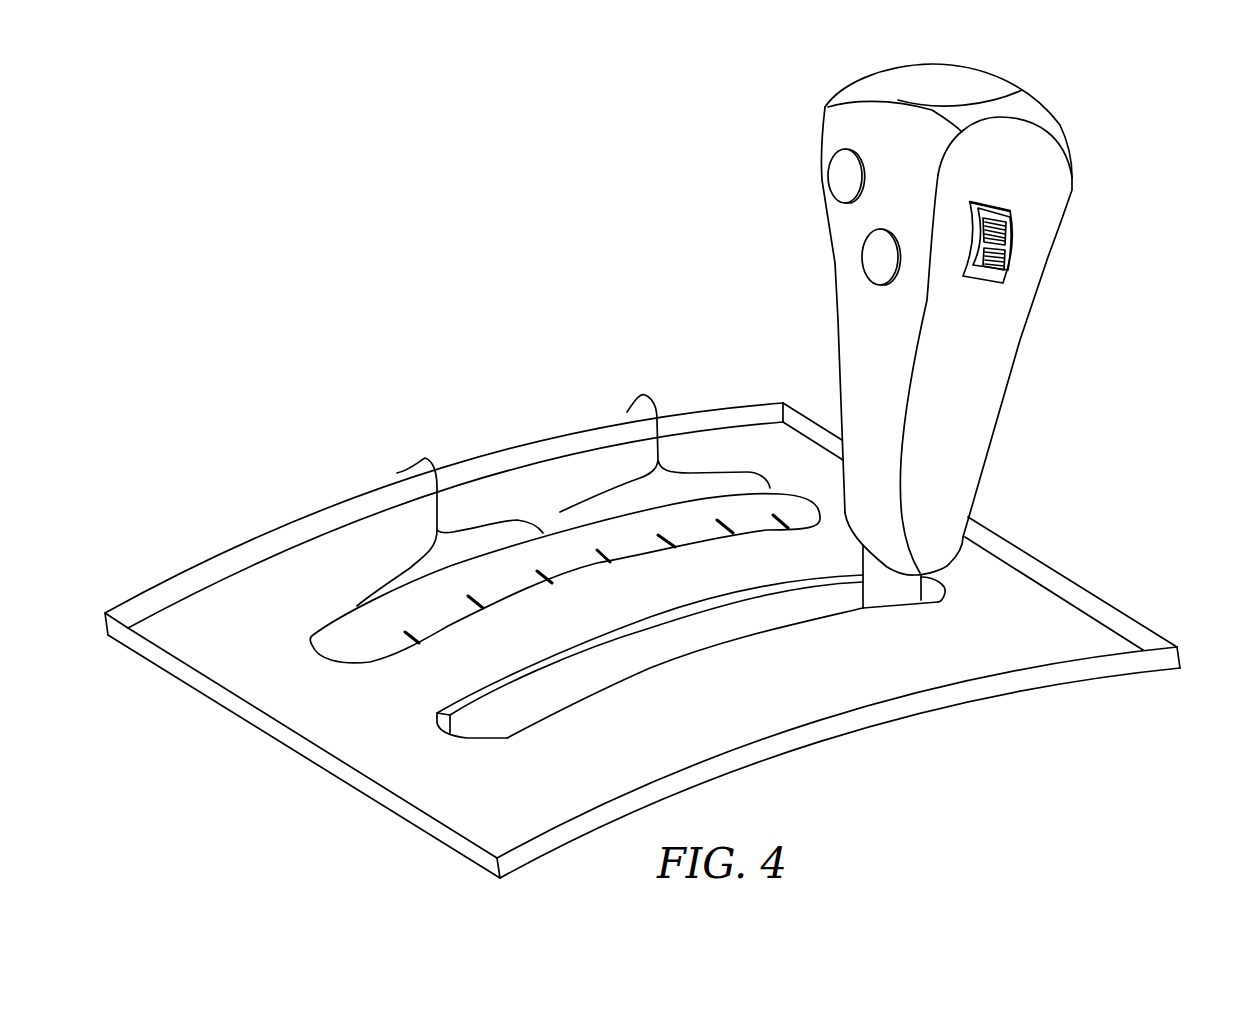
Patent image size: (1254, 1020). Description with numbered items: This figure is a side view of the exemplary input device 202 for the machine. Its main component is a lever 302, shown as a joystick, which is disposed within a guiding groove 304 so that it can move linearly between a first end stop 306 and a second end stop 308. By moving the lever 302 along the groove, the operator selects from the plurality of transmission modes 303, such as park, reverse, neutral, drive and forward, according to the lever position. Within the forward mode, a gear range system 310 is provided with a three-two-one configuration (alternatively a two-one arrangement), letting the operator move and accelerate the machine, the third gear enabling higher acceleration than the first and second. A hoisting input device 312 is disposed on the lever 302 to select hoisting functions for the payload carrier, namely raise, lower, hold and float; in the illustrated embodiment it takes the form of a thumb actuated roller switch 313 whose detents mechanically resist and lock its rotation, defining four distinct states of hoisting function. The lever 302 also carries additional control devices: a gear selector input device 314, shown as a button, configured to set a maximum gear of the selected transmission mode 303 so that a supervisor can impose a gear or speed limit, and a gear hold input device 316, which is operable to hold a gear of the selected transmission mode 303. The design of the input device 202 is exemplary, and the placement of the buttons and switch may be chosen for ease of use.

The input device 202 is at (760, 103).
The lever 302 is at (1038, 100).
The transmission modes 303 is at (627, 412).
The guiding groove 304 is at (740, 638).
The first end stop 306 is at (954, 580).
The second end stop 308 is at (448, 748).
The gear range system 310 is at (397, 473).
The hoisting input device 312 is at (1012, 210).
The roller switch 313 is at (1010, 254).
The gear selector input device 314 is at (842, 177).
The gear hold input device 316 is at (875, 256).